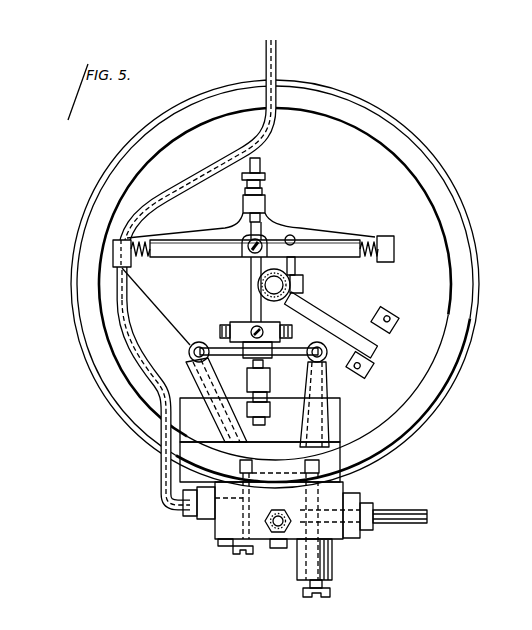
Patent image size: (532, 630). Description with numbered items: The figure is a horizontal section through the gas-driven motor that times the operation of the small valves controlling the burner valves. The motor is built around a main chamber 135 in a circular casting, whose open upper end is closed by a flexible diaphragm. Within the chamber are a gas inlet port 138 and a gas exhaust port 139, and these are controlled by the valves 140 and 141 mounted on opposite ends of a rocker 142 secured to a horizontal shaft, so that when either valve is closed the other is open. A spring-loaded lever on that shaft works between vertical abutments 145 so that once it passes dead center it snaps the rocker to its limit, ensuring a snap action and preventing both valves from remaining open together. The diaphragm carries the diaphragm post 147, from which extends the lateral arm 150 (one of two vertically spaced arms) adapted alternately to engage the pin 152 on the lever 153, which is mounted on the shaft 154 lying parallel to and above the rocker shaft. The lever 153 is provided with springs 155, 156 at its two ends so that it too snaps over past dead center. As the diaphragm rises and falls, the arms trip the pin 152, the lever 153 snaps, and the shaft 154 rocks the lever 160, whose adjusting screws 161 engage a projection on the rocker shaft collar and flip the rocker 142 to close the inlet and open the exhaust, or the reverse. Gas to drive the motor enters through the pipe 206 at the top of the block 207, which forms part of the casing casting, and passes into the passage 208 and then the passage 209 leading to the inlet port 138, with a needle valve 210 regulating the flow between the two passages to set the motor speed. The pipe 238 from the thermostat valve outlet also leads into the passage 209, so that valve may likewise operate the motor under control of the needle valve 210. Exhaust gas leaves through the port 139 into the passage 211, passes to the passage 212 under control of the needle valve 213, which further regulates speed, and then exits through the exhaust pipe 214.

The main chamber 135 is at (138, 178).
The gas inlet port 138 is at (324, 356).
The gas exhaust port 139 is at (194, 368).
The inlet valve 140 is at (373, 363).
The exhaust valve 141 is at (189, 348).
The rocker 142 is at (270, 356).
The vertical abutments 145 is at (113, 250).
The diaphragm post 147 is at (259, 287).
The lateral arm 150 is at (303, 288).
The pin 152 is at (297, 263).
The lever 153 is at (304, 240).
The shaft 154 is at (252, 282).
The springs 155 is at (140, 258).
The spring 156 is at (370, 240).
The lever 160 is at (262, 323).
The adjusting screws 161 is at (221, 327).
The pipe 206 is at (288, 503).
The block 207 is at (335, 491).
The passage 208 is at (289, 543).
The passage 209 is at (333, 424).
The needle valve 210 is at (335, 585).
The passage 211 is at (243, 462).
The passage 212 is at (214, 527).
The needle valve 213 is at (238, 553).
The exhaust pipe 214 is at (162, 474).
The pipe 238 is at (410, 513).